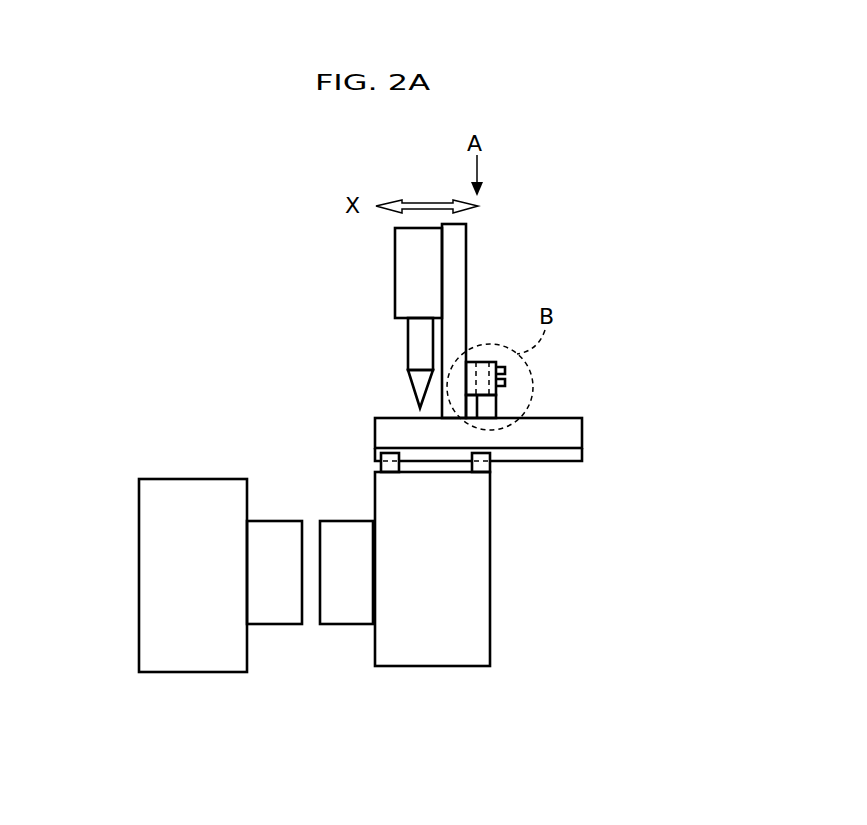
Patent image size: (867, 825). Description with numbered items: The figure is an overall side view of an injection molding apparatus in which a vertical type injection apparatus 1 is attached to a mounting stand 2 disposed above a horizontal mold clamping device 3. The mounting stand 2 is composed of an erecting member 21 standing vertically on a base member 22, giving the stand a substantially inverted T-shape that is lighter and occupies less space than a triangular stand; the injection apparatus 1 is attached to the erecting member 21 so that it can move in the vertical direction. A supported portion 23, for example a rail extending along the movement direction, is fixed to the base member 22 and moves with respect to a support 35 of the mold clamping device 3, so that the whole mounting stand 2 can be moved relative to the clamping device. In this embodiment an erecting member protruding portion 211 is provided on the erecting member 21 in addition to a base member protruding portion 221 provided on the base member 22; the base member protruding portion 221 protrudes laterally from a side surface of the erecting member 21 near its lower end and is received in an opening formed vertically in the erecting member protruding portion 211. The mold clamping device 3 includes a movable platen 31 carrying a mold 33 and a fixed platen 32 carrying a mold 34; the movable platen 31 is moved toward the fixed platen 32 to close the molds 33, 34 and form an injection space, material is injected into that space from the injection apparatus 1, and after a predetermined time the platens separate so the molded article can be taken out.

The injection apparatus 1 is at (405, 265).
The mounting stand 2 is at (587, 315).
The erecting member 21 is at (453, 258).
The erecting member protruding portion 211 is at (482, 362).
The base member protruding portion 221 is at (487, 406).
The base member 22 is at (582, 424).
The supported portion 23 is at (582, 452).
The mold clamping device 3 is at (130, 442).
The movable platen 31 is at (192, 479).
The fixed platen 32 is at (472, 590).
The mold 33 is at (278, 521).
The mold 34 is at (343, 521).
The support 35 is at (393, 472).